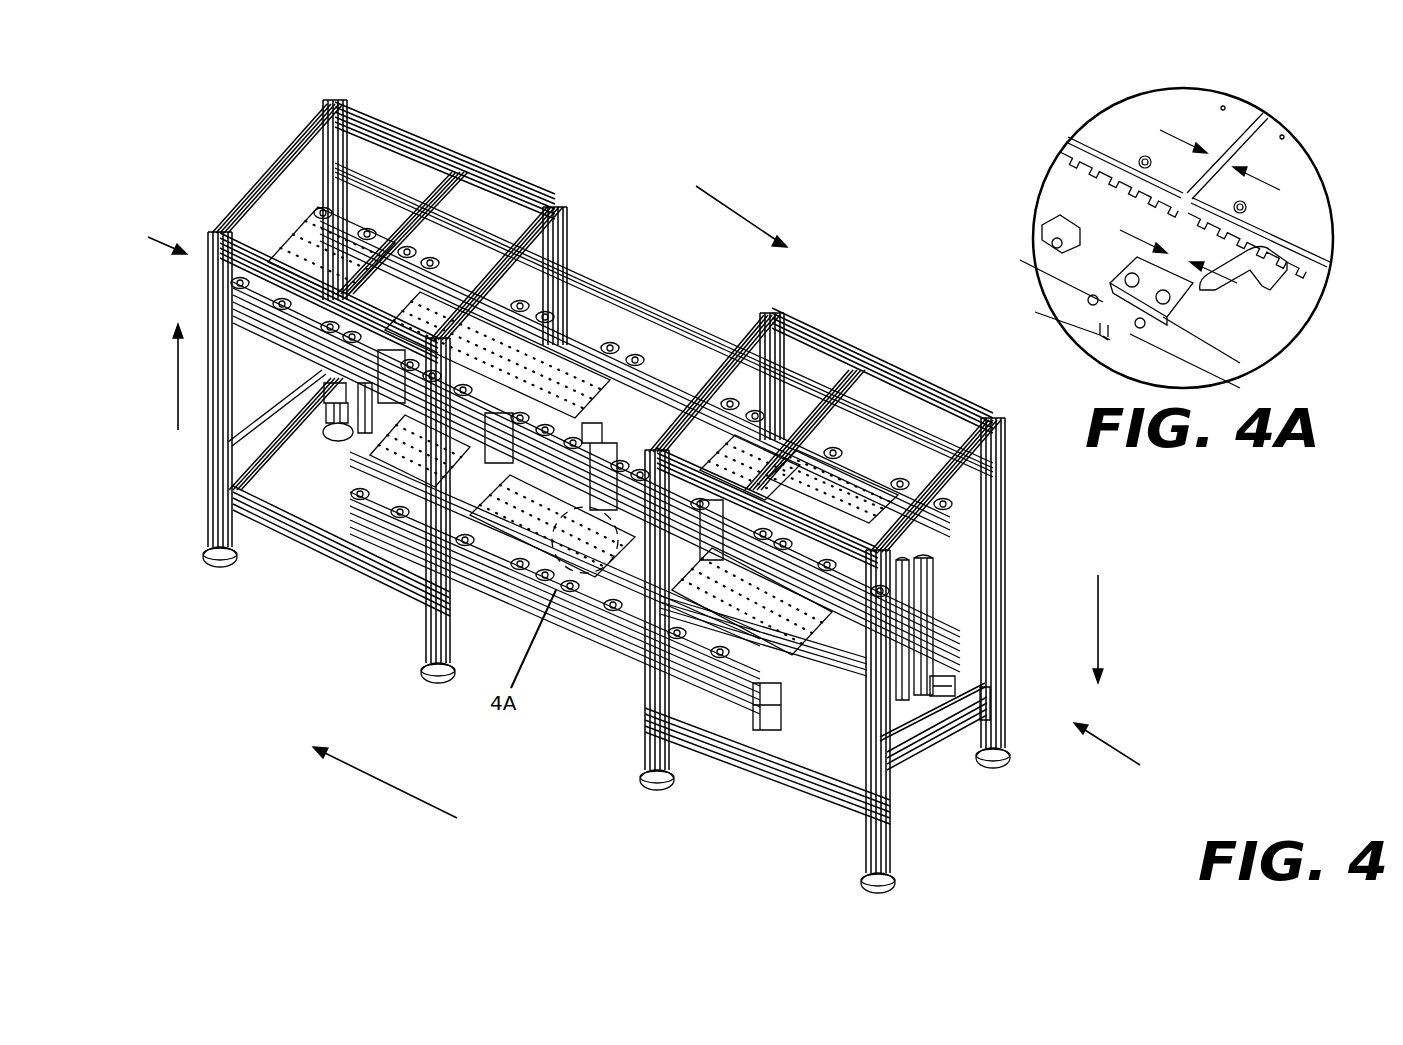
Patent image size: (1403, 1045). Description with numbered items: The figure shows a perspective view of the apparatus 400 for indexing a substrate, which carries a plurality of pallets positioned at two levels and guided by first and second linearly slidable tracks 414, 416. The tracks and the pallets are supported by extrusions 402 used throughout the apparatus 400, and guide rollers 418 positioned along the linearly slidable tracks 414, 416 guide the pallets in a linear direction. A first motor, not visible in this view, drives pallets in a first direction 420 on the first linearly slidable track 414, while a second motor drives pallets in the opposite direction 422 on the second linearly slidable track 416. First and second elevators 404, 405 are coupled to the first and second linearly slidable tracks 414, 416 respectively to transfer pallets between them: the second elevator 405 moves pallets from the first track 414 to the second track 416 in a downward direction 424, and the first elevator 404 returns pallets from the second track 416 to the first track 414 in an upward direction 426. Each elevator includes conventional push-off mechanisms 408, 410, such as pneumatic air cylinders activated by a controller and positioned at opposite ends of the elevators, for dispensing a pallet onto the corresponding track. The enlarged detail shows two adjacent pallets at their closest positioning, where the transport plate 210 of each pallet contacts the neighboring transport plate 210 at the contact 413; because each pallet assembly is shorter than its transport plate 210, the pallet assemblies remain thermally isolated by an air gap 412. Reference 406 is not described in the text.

In FIG. 4, the apparatus 400 is at (1400, 812).
In FIG. 4, the extrusions 402 is at (212, 437).
In FIG. 4, the first elevator 404 is at (151, 233).
In FIG. 4, the second elevator 405 is at (1128, 756).
In FIG. 4, the pneumatic cylinder 406 is at (385, 425).
In FIG. 4, the push-off mechanism 408 is at (945, 683).
In FIG. 4, the push-off mechanism 410 is at (268, 240).
In FIG. 4A, the air gap 412 is at (1221, 156).
In FIG. 4A, the contact between transport plates 413 is at (1178, 250).
In FIG. 4, the first linearly slidable track 414 is at (740, 714).
In FIG. 4, the second linearly slidable track 416 is at (617, 657).
In FIG. 4, the guide rollers 418 is at (490, 570).
In FIG. 4, the first direction 420 is at (727, 205).
In FIG. 4, the direction opposite to the first direction 422 is at (370, 778).
In FIG. 4, the downward direction 424 is at (1122, 622).
In FIG. 4, the upward direction 426 is at (177, 386).
In FIG. 4A, the transport plate 210 is at (1073, 293).